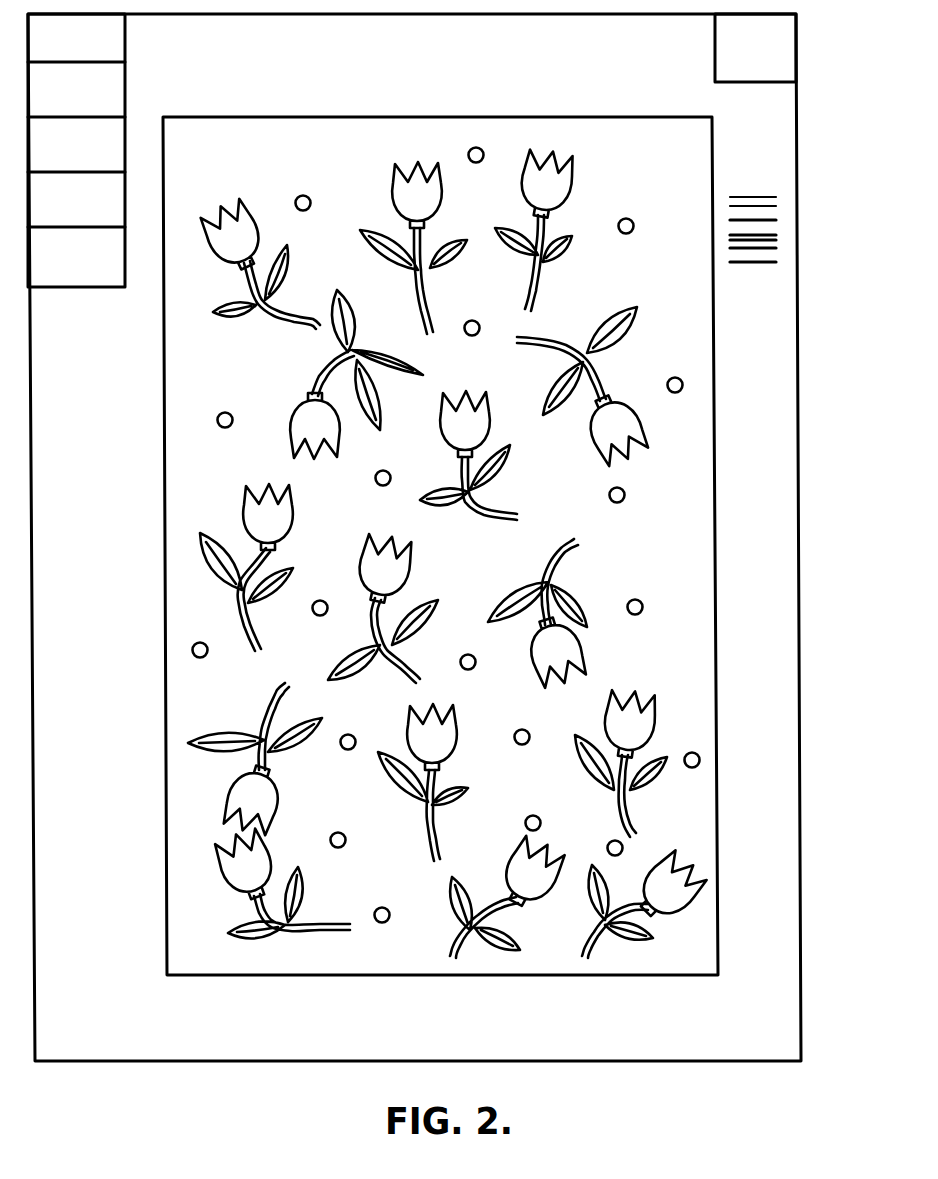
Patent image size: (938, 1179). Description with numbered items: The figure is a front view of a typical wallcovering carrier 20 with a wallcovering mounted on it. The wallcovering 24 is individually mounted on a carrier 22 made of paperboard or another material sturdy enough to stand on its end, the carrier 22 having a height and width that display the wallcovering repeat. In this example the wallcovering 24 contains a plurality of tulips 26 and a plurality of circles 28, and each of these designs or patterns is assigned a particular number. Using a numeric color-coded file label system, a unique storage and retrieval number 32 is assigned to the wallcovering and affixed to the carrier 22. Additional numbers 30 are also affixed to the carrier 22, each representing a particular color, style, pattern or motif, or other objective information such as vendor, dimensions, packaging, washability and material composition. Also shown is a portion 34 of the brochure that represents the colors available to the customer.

The wallcovering carrier 20 is at (808, 573).
The carrier 22 is at (801, 752).
The wallcovering 24 is at (716, 516).
The tulips 26 is at (250, 898).
The circles 28 is at (386, 923).
The additional numbers 30 is at (125, 85).
The storage and retrieval number 32 is at (715, 49).
The portion of brochure 34 is at (751, 197).